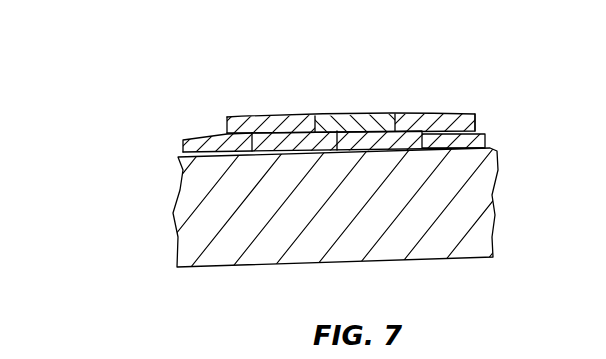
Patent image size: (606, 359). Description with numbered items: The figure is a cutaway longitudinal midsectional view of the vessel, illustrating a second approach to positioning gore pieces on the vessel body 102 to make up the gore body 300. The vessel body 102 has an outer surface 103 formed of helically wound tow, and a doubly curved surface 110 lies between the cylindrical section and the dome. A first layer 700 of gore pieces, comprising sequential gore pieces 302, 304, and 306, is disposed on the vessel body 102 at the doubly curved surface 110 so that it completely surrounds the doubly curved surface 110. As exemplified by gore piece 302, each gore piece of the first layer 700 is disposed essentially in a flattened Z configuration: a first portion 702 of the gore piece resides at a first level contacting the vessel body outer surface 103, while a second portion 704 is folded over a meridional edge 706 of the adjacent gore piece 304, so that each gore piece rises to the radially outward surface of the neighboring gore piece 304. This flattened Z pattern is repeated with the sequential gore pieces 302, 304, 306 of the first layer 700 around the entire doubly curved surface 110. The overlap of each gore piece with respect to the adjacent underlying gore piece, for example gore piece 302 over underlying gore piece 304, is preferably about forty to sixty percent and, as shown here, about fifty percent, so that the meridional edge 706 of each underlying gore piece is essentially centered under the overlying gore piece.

The first layer 700 is at (140, 124).
The vessel body 102 is at (486, 164).
The outer surface 103 is at (450, 149).
The doubly curved surface 110 is at (375, 149).
The gore body 300 is at (266, 85).
The gore piece 302 is at (303, 115).
The gore piece 304 is at (362, 115).
The gore piece 306 is at (474, 119).
The first portion 702 is at (184, 148).
The second portion 704 is at (277, 148).
The meridional edge 706 is at (275, 157).